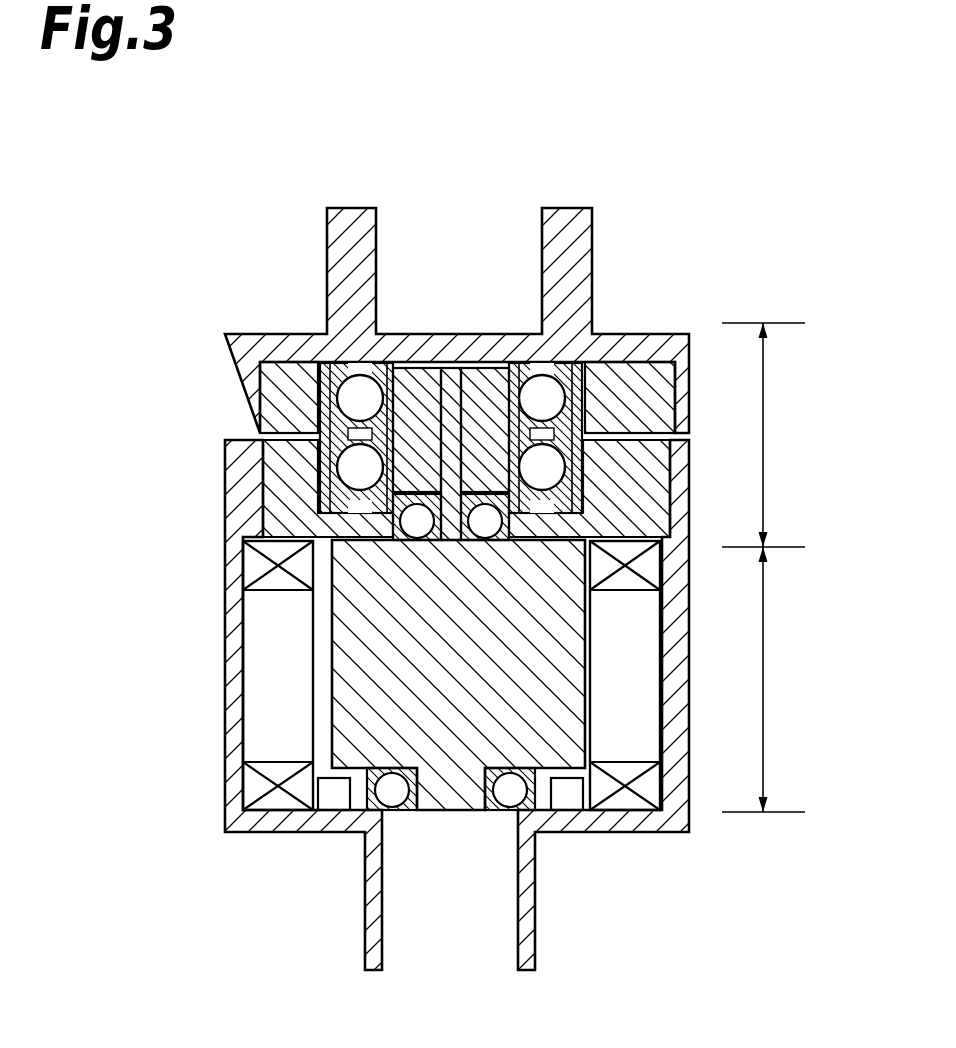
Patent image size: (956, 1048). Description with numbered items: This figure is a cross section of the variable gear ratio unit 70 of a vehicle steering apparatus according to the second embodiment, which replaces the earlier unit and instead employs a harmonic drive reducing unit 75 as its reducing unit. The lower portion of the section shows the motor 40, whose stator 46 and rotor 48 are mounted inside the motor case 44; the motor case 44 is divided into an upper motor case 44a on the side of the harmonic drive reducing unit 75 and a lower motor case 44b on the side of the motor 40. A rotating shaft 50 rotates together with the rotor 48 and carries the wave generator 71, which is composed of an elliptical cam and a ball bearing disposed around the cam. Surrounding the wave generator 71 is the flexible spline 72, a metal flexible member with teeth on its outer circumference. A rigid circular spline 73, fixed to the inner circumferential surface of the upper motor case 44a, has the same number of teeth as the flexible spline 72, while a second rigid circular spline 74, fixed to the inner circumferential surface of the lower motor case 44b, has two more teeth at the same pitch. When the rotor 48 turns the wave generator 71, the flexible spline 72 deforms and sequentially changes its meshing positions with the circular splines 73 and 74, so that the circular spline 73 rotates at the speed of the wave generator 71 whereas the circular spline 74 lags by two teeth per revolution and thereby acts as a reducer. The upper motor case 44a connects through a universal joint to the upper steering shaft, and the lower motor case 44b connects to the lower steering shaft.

The variable gear ratio unit 70 is at (238, 220).
The wave generator 71 is at (422, 378).
The flexible spline 72 is at (322, 358).
The rigid circular spline 73 is at (240, 372).
The rigid circular spline 74 is at (272, 474).
The harmonic drive reducing unit 75 is at (764, 383).
The rotating shaft 50 is at (455, 370).
The motor case 44 is at (434, 589).
The upper motor case 44a is at (427, 320).
The lower motor case 44b is at (436, 700).
The stator 46 is at (255, 712).
The rotor 48 is at (345, 765).
The motor 40 is at (764, 712).